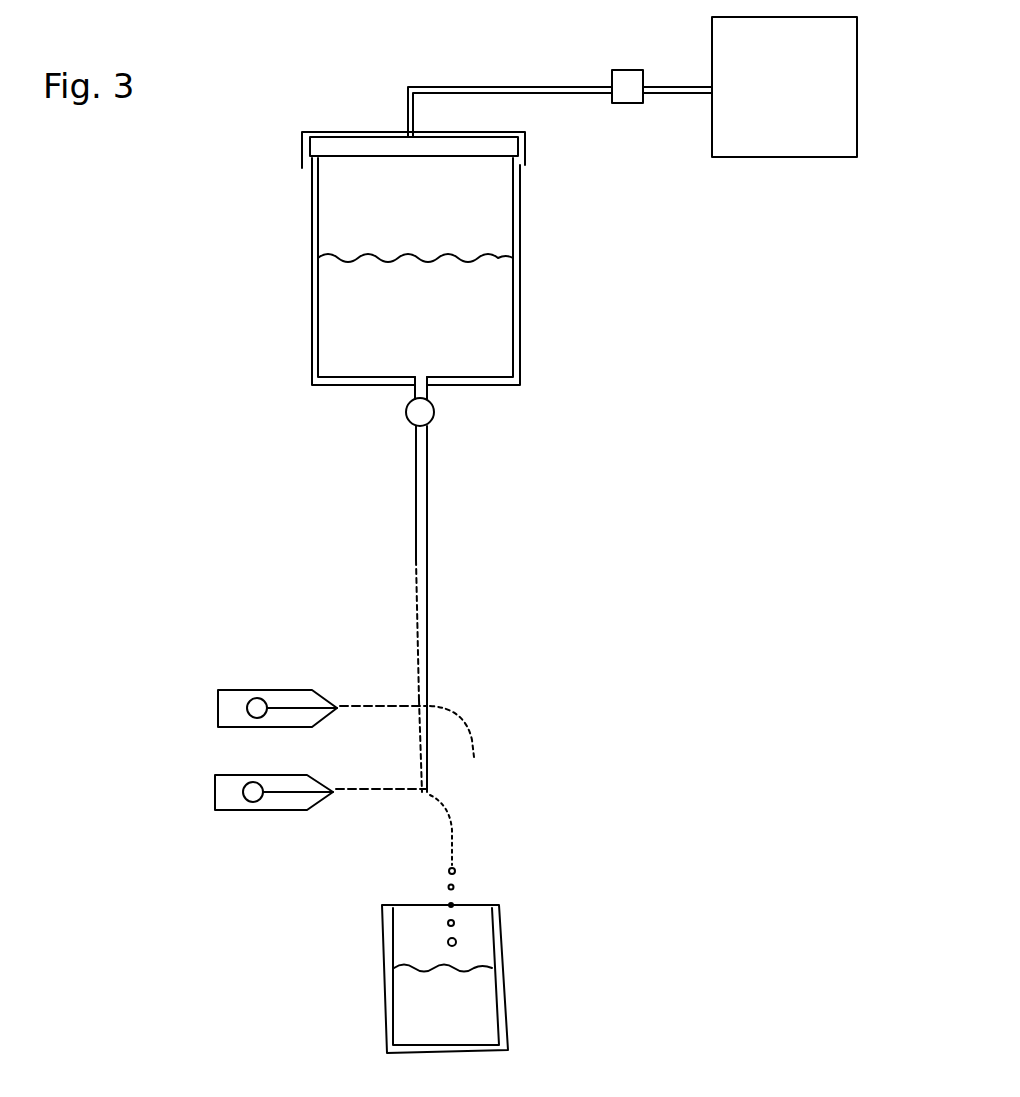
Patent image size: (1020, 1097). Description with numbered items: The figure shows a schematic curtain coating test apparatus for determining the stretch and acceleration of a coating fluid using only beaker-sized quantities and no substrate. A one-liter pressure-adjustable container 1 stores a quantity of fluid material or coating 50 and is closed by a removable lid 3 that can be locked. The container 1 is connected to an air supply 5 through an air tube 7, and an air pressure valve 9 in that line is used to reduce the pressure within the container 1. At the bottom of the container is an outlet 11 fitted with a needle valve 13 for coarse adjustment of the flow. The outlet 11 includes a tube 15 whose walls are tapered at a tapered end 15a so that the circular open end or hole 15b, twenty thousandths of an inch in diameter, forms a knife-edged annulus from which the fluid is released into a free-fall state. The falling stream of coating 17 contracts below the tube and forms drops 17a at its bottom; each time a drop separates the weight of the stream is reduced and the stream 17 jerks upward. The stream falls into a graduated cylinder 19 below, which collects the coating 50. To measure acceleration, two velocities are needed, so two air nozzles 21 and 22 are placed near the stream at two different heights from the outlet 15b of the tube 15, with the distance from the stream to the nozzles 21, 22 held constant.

The pressure-adjustable container 1 is at (312, 245).
The removable lid 3 is at (303, 150).
The air supply 5 is at (764, 157).
The air tube 7 is at (577, 95).
The air pressure valve 9 is at (627, 71).
The outlet 11 is at (376, 500).
The needle valve 13 is at (426, 410).
The tube 15 is at (416, 437).
The tapered end 15a is at (427, 535).
The hole 15b is at (418, 556).
The stream of coating 17 is at (425, 645).
The drops 17a is at (432, 862).
The graduated cylinder 19 is at (500, 990).
The air nozzle 21 is at (218, 712).
The air nozzle 22 is at (265, 780).
The fluid material or coating 50 is at (433, 328).